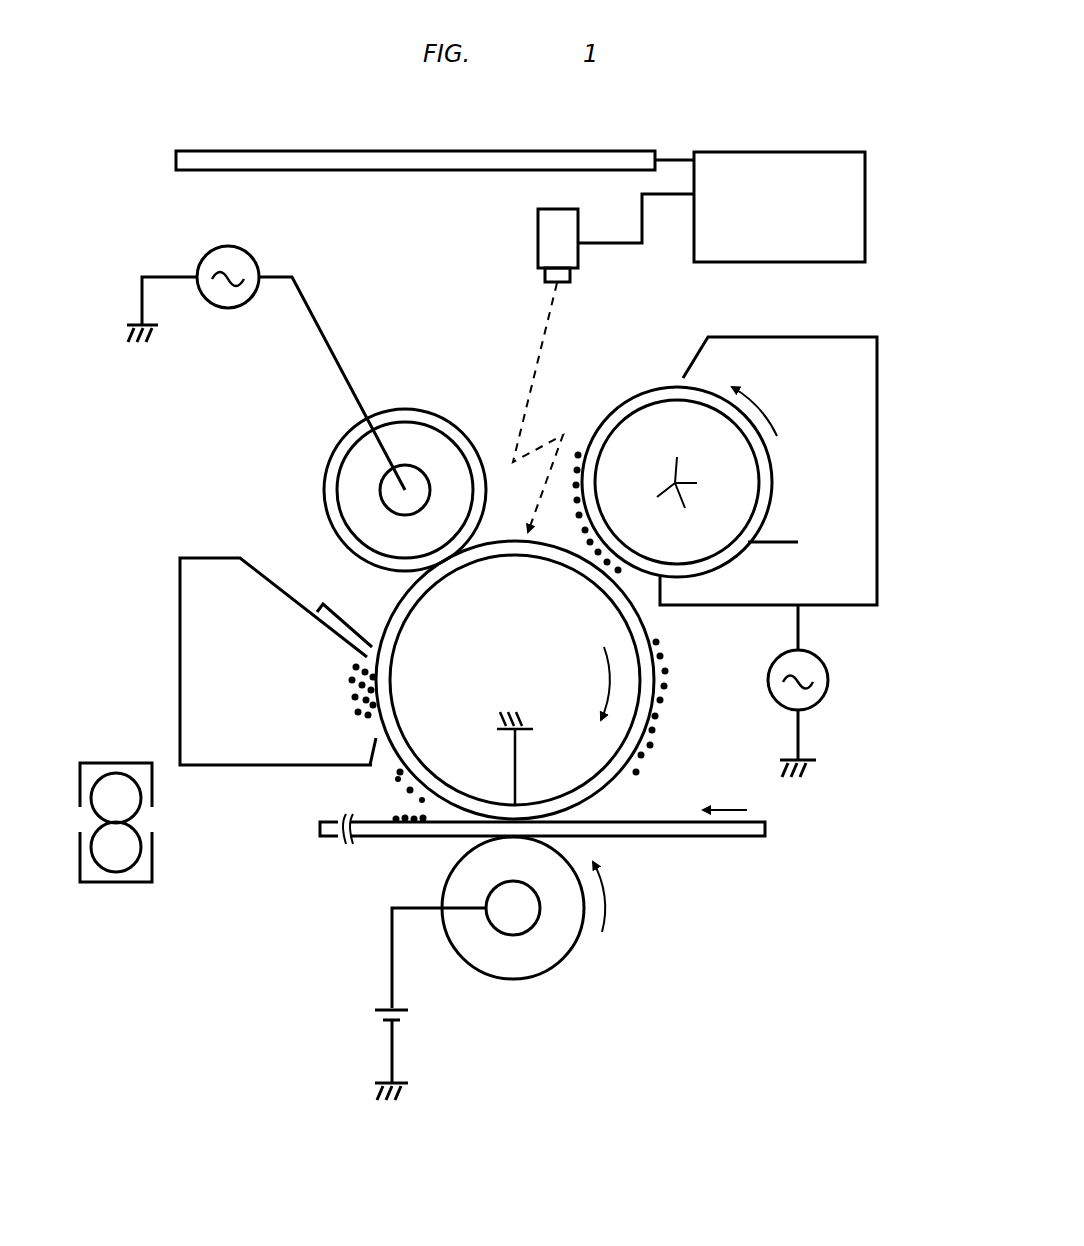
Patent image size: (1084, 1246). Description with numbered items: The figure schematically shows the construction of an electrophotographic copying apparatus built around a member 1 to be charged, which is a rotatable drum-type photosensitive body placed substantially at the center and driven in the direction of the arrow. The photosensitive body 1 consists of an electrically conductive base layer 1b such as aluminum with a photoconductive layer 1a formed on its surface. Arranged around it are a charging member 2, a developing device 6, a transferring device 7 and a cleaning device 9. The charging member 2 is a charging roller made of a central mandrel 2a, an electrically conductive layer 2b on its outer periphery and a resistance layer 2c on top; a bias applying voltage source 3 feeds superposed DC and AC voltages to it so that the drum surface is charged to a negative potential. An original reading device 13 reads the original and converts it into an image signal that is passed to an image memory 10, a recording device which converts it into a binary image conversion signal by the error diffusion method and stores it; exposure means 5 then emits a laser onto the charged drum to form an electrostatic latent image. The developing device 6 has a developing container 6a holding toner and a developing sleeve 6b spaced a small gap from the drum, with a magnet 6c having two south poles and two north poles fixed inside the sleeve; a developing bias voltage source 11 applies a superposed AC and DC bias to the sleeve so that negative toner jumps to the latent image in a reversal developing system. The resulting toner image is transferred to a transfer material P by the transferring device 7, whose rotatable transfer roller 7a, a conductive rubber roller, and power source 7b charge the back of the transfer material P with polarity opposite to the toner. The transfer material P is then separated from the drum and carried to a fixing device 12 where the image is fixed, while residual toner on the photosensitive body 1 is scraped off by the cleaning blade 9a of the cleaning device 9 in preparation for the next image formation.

The member to be charged 1 is at (561, 682).
The photoconductive layer 1a is at (655, 715).
The electrically conductive base layer 1b is at (617, 745).
The charging member 2 is at (357, 490).
The central mandrel 2a is at (380, 505).
The electrically conductive layer 2b is at (353, 486).
The resistance layer 2c is at (331, 456).
The bias applying voltage source 3 is at (256, 300).
The exposure means 5 is at (538, 240).
The developing device 6 is at (764, 471).
The developing container 6a is at (864, 439).
The developing sleeve 6b is at (762, 497).
The magnet 6c is at (740, 478).
The transferring device 7 is at (490, 968).
The transfer roller 7a is at (543, 960).
The power source 7b is at (432, 1004).
The cleaning device 9 is at (278, 692).
The cleaning blade 9a is at (335, 610).
The image memory 10 is at (867, 175).
The developing bias voltage source 11 is at (830, 670).
The fixing device 12 is at (120, 762).
The original reading device 13 is at (560, 150).
The transfer material P is at (696, 843).